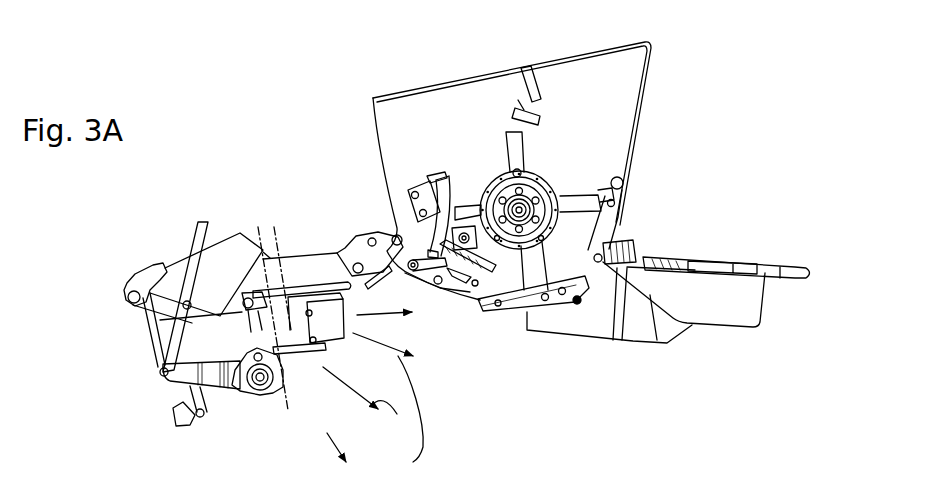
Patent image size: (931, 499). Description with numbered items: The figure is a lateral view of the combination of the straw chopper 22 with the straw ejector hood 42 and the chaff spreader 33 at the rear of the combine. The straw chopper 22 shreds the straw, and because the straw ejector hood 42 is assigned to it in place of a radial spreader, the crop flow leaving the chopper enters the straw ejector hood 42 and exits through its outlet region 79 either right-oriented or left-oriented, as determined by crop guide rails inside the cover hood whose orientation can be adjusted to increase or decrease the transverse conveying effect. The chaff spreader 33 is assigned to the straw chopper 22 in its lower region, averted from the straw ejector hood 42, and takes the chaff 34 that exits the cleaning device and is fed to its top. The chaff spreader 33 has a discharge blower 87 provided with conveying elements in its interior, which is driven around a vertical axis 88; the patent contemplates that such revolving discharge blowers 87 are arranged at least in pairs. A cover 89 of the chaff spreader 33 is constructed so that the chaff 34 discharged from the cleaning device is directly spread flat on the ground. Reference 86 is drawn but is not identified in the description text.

The straw chopper 22 is at (534, 54).
The chaff spreader 33 is at (291, 222).
The chaff 34 is at (337, 449).
The straw ejector hood 42 is at (729, 243).
The outlet region 79 is at (772, 313).
The rod 86 is at (326, 327).
The discharge blower 87 is at (302, 357).
The vertical axis 88 is at (288, 400).
The cover 89 is at (238, 380).